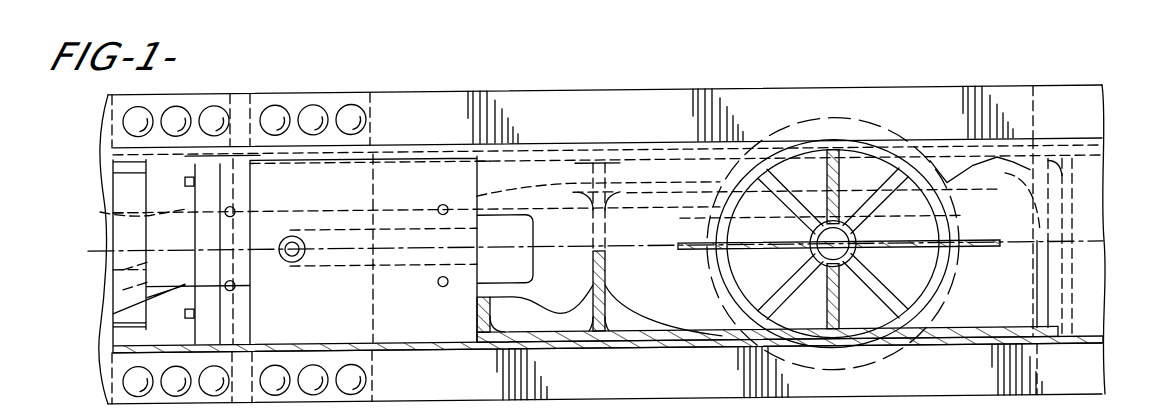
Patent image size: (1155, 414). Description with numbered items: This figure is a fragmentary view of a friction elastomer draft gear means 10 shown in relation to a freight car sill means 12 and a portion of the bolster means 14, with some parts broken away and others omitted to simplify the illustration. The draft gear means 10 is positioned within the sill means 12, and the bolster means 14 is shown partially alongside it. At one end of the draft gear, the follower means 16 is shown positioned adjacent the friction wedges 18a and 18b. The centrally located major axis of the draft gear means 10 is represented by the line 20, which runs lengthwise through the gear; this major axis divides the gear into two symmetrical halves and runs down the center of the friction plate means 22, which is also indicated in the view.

The friction elastomer draft gear means 10 is at (413, 175).
The sill means 12 is at (444, 356).
The bolster means 14 is at (873, 366).
The follower means 16 is at (130, 312).
The friction wedge 18a is at (123, 204).
The friction wedge 18b is at (97, 296).
The line representing the major axis 20 is at (595, 246).
The friction plate means 22 is at (95, 272).